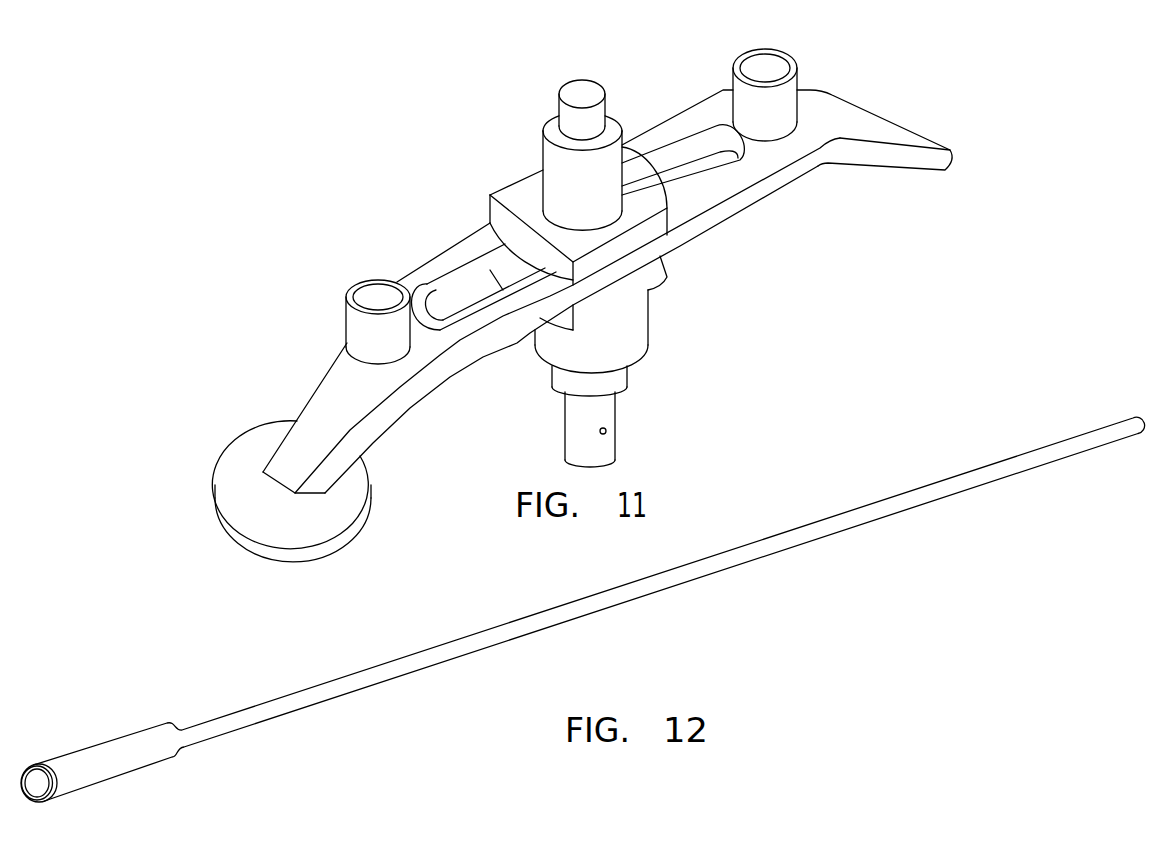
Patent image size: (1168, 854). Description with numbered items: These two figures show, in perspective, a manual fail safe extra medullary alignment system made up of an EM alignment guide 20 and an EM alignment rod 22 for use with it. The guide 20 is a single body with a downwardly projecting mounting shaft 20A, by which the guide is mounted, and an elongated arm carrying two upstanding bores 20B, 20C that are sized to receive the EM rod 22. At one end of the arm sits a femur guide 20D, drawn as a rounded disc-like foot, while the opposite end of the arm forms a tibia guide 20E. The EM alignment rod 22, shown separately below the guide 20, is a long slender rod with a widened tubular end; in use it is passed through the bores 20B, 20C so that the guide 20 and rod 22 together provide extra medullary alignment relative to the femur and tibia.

In FIG. 11, the EM alignment guide 20 is at (320, 240).
In FIG. 11, the mounting shaft 20A is at (605, 452).
In FIG. 11, the bore 20B is at (377, 297).
In FIG. 11, the bore 20C is at (763, 65).
In FIG. 11, the femur guide 20D is at (235, 468).
In FIG. 11, the tibia guide 20E is at (937, 167).
In FIG. 12, the EM alignment rod 22 is at (688, 572).